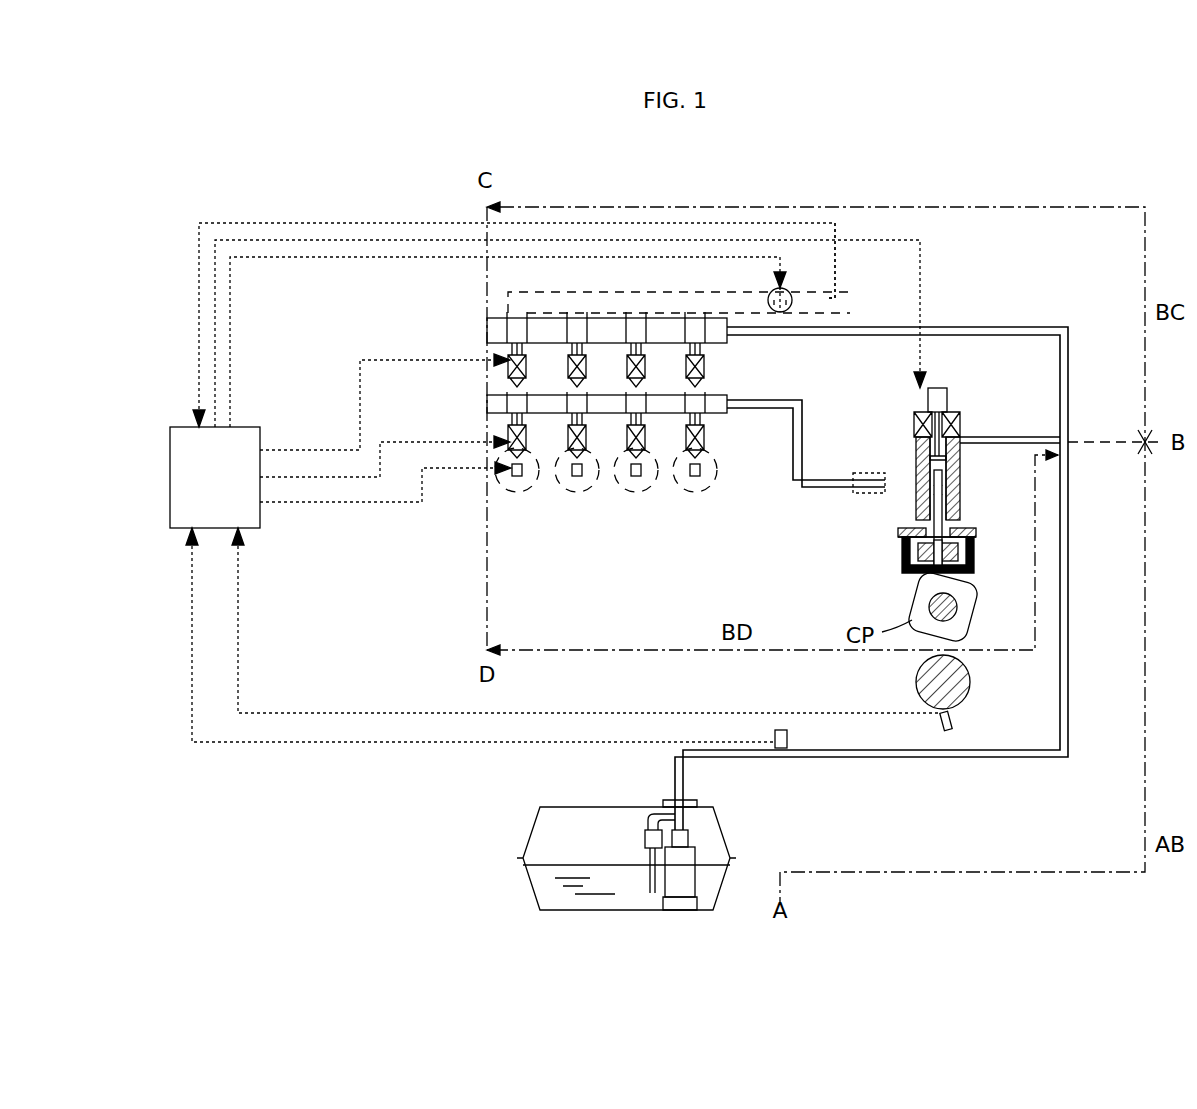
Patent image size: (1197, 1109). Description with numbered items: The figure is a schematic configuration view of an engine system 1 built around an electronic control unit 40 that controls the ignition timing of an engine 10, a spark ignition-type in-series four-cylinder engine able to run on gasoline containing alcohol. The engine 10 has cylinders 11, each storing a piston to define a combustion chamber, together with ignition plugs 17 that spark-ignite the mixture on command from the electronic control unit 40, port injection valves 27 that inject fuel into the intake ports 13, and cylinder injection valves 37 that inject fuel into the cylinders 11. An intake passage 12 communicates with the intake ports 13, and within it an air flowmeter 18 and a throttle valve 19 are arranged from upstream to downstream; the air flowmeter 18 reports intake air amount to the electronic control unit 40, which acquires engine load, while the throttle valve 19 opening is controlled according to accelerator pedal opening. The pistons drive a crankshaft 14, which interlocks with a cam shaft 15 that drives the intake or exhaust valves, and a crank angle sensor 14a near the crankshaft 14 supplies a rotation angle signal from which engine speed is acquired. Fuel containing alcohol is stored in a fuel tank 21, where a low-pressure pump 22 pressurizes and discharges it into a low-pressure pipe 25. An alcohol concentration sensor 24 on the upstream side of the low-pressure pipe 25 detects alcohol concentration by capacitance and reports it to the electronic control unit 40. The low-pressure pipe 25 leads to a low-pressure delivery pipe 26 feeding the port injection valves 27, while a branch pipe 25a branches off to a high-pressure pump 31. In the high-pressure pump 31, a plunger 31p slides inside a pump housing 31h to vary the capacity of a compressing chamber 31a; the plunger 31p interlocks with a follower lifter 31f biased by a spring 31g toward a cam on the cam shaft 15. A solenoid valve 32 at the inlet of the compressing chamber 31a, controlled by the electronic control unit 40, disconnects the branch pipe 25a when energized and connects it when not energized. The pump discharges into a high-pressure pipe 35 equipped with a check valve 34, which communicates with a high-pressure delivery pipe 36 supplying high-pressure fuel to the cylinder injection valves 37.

The engine system 1 is at (1064, 178).
The engine 10 is at (450, 530).
The cylinders 11 is at (524, 492).
The intake passage 12 is at (696, 292).
The intake ports 13 is at (503, 358).
The crankshaft 14 is at (972, 680).
The crank angle sensor 14a is at (955, 727).
The cam shaft 15 is at (928, 606).
The ignition plugs 17 is at (522, 478).
The air flowmeter 18 is at (834, 290).
The throttle valve 19 is at (789, 292).
The fuel tank 21 is at (550, 806).
The low-pressure pump 22 is at (698, 850).
The alcohol concentration sensor 24 is at (790, 738).
The low-pressure pipe 25 is at (1035, 327).
The branch pipe 25a is at (1035, 437).
The low-pressure delivery pipe 26 is at (499, 317).
The port injection valves 27 is at (528, 364).
The high-pressure pump 31 is at (974, 490).
The compressing chamber 31a is at (918, 448).
The follower lifter 31f is at (902, 555).
The spring 31g is at (900, 540).
The pump housing 31h is at (960, 490).
The plunger 31p is at (934, 522).
The solenoid valve 32 is at (987, 388).
The check valve 34 is at (858, 494).
The high-pressure pipe 35 is at (885, 476).
The high-pressure delivery pipe 36 is at (487, 405).
The cylinder injection valves 37 is at (530, 455).
The electronic control unit 40 is at (202, 491).